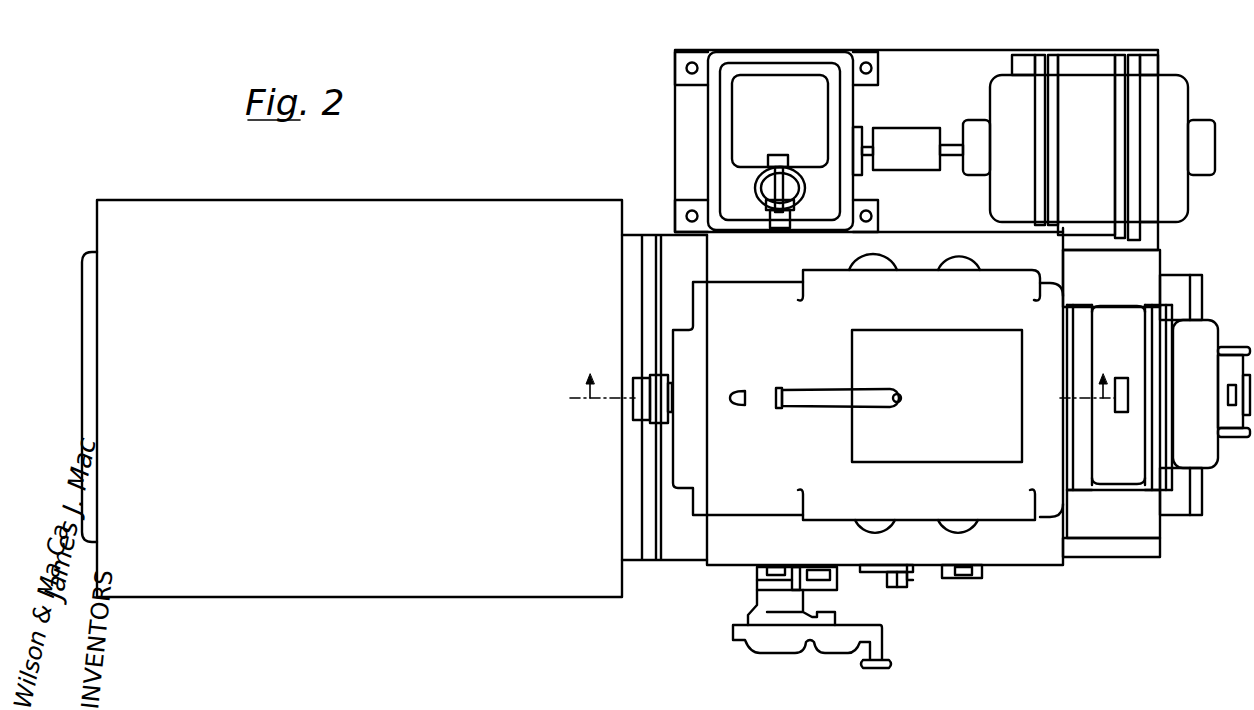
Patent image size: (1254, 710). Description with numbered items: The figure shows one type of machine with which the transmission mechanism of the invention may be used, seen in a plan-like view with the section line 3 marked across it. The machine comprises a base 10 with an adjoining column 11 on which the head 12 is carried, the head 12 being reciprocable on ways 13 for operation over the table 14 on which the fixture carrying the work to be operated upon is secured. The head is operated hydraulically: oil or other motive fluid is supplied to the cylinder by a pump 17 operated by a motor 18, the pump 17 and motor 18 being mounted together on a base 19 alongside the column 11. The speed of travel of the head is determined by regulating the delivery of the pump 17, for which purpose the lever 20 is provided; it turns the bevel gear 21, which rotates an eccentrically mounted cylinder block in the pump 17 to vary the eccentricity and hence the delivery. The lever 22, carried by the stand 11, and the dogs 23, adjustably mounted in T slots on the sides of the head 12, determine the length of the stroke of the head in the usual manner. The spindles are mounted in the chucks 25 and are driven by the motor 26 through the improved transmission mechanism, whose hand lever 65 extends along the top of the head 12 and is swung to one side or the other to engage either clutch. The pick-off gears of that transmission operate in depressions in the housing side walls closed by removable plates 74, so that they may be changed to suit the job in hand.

The base 10 is at (82, 441).
The column 11 is at (1157, 526).
The head 12 is at (785, 505).
The ways 13 is at (1105, 556).
The table 14 is at (612, 589).
The pump 17 is at (708, 127).
The motor 18 is at (1078, 75).
The base 19 is at (953, 42).
The lever 20 is at (857, 650).
The bevel gear 21 is at (774, 228).
The lever 22 is at (900, 588).
The dogs 23 is at (978, 578).
The chucks 25 is at (658, 418).
The motor 26 is at (1124, 317).
The section line 3- 3 is at (839, 382).
The hand lever 65 is at (838, 385).
The removable plates 74 is at (848, 273).